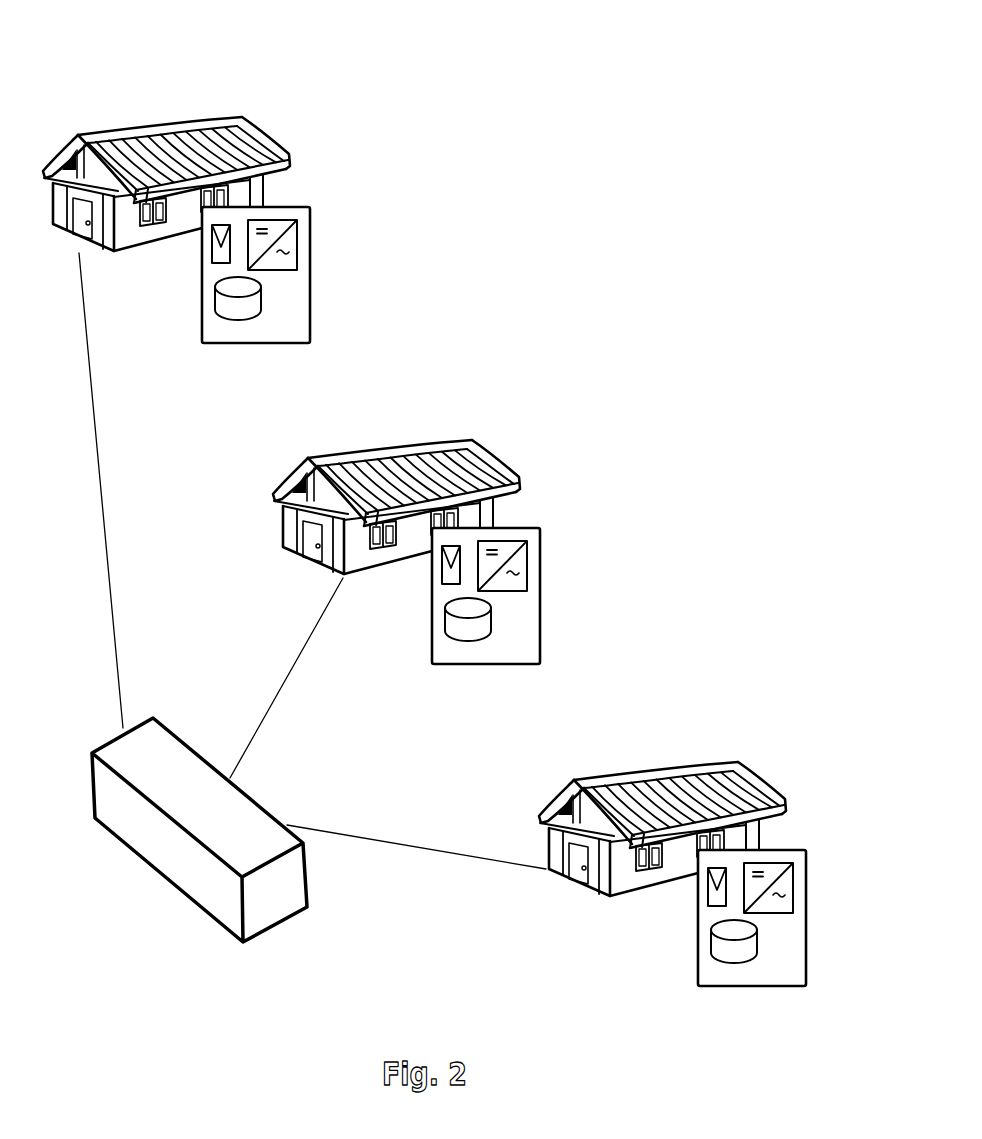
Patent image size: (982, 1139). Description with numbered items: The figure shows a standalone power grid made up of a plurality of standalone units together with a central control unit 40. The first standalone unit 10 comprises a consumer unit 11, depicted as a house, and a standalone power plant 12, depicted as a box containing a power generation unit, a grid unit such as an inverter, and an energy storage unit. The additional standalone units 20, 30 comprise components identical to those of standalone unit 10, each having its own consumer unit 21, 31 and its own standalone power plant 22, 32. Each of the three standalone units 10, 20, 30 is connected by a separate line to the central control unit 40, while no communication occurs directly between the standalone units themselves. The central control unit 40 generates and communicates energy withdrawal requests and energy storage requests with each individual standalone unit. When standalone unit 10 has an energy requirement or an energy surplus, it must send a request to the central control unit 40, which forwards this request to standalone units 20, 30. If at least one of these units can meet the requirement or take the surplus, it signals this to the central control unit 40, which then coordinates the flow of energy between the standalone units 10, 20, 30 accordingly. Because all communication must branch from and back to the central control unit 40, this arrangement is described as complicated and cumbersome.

The standalone unit 10 is at (233, 173).
The consumer unit 11 is at (170, 126).
The standalone power plant 12 is at (310, 255).
The standalone unit 20 is at (463, 495).
The consumer unit 21 is at (400, 449).
The standalone power plant 22 is at (540, 577).
The standalone unit 30 is at (713, 817).
The consumer unit 31 is at (667, 772).
The standalone power plant 32 is at (806, 887).
The central control unit 40 is at (178, 863).